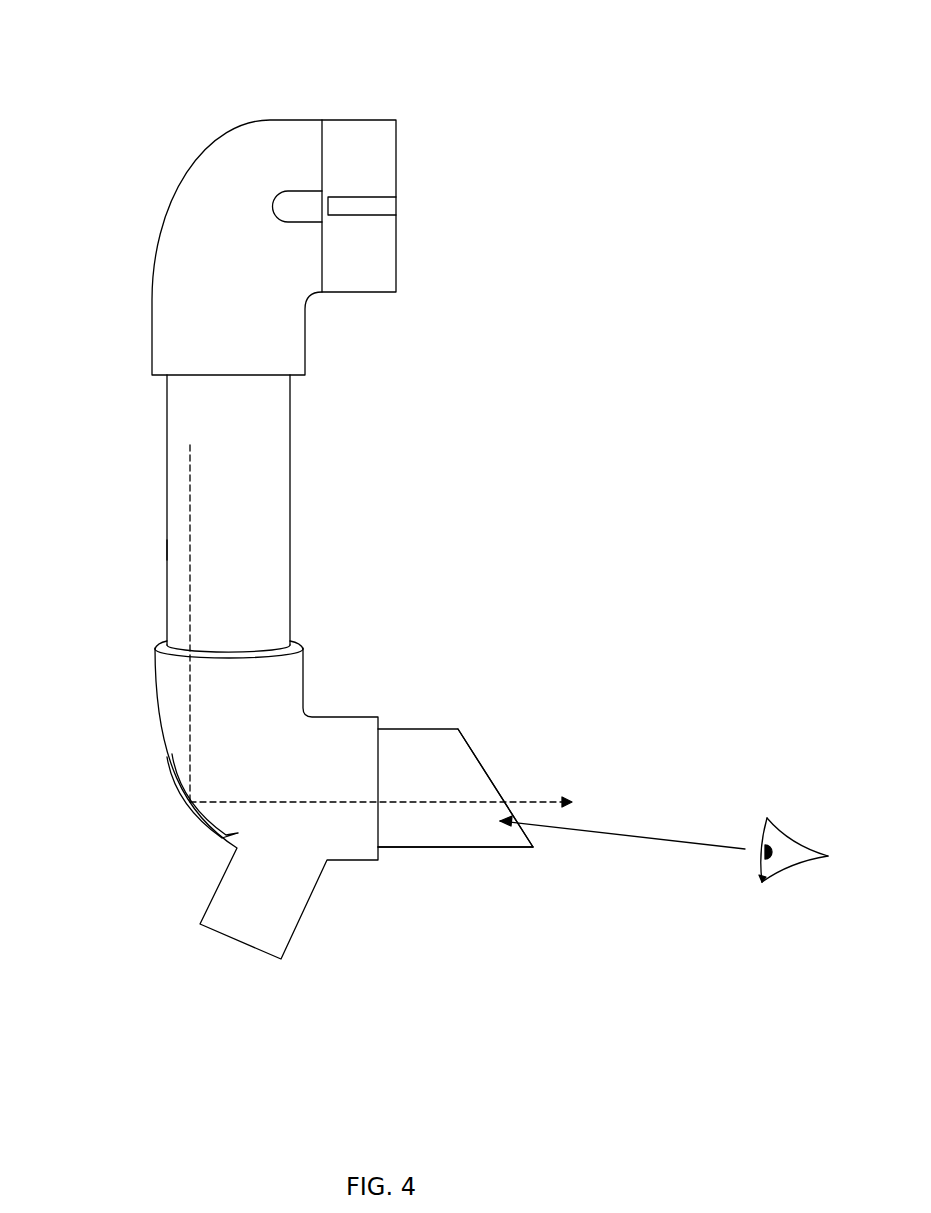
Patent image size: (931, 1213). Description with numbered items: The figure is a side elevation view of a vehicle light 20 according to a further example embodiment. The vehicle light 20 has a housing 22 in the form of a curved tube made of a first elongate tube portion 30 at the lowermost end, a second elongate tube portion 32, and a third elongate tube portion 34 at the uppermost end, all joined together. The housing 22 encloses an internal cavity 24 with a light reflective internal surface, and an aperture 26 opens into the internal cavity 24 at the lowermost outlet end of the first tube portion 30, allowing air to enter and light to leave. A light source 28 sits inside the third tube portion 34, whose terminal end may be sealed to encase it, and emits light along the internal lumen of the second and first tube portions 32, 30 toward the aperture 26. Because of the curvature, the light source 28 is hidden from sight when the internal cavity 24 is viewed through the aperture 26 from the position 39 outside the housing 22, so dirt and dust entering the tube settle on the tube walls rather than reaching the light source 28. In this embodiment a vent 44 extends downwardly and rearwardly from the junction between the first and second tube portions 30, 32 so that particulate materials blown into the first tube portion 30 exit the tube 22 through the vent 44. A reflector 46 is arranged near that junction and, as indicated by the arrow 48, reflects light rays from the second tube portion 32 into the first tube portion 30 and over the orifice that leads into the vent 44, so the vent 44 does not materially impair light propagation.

The vehicle light 20 is at (140, 147).
The housing 22 is at (212, 405).
The internal cavity 24 is at (413, 786).
The aperture 26 is at (480, 762).
The light source 28 is at (383, 203).
The first elongate tube portion 30 is at (425, 847).
The second elongate tube portion 32 is at (167, 550).
The third elongate tube portion 34 is at (365, 120).
The position 39 is at (745, 850).
The vent 44 is at (212, 899).
The reflector 46 is at (190, 805).
The arrow 48 is at (190, 485).